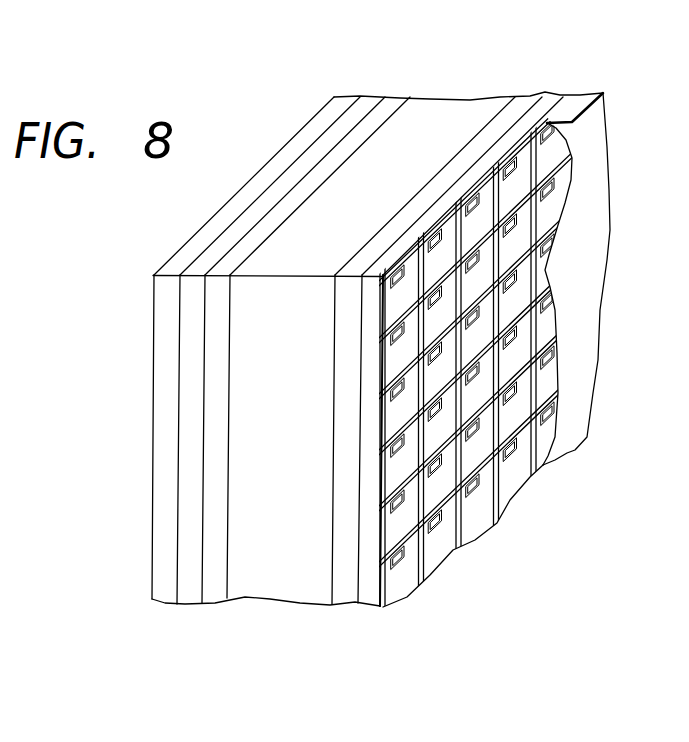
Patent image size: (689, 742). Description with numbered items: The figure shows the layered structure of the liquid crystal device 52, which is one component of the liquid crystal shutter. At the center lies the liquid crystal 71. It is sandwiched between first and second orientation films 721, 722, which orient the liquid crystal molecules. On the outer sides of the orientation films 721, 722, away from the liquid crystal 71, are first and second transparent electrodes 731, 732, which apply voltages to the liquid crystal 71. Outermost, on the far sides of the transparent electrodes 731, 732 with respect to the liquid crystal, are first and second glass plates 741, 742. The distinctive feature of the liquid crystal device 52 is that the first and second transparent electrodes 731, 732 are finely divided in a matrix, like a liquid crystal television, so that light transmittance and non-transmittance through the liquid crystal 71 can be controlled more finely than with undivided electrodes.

The liquid crystal device 52 is at (289, 612).
The liquid crystal 71 is at (422, 110).
The first orientation film 721 is at (377, 114).
The second orientation film 722 is at (520, 100).
The first transparent electrode 731 is at (342, 123).
The second transparent electrode 732 is at (553, 98).
The first glass plate 741 is at (167, 585).
The second glass plate 742 is at (583, 97).